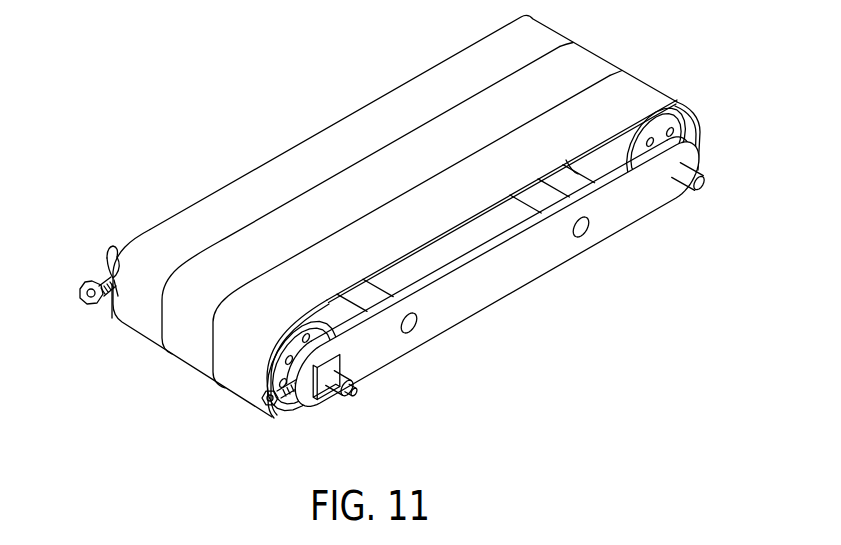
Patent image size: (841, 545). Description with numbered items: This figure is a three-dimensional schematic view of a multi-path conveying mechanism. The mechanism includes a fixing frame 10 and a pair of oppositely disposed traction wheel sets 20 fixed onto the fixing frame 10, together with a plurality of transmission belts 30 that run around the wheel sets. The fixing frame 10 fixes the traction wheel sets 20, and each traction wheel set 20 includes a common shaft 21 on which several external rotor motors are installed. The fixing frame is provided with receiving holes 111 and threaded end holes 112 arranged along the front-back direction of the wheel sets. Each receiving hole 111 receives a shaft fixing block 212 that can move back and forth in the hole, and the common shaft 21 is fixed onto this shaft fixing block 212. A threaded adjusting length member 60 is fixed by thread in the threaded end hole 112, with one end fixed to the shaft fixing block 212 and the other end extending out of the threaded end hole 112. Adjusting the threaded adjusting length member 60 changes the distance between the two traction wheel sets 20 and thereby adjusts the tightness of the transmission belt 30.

The fixing frame 10 is at (448, 315).
The traction wheel set 20 is at (266, 381).
The common shaft 21 is at (343, 393).
The transmission belt 30 is at (362, 240).
The threaded adjusting length member 60 is at (271, 410).
The receiving hole 111 is at (356, 386).
The threaded end hole 112 is at (297, 408).
The shaft fixing block 212 is at (325, 395).